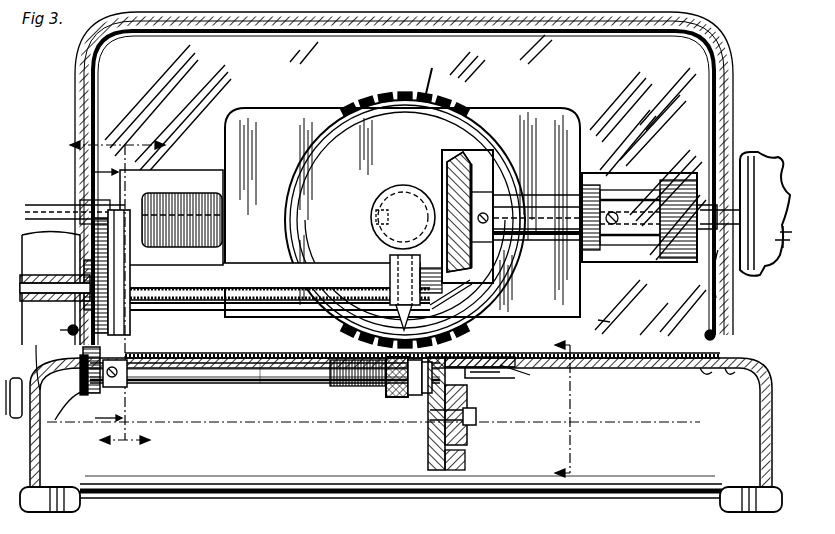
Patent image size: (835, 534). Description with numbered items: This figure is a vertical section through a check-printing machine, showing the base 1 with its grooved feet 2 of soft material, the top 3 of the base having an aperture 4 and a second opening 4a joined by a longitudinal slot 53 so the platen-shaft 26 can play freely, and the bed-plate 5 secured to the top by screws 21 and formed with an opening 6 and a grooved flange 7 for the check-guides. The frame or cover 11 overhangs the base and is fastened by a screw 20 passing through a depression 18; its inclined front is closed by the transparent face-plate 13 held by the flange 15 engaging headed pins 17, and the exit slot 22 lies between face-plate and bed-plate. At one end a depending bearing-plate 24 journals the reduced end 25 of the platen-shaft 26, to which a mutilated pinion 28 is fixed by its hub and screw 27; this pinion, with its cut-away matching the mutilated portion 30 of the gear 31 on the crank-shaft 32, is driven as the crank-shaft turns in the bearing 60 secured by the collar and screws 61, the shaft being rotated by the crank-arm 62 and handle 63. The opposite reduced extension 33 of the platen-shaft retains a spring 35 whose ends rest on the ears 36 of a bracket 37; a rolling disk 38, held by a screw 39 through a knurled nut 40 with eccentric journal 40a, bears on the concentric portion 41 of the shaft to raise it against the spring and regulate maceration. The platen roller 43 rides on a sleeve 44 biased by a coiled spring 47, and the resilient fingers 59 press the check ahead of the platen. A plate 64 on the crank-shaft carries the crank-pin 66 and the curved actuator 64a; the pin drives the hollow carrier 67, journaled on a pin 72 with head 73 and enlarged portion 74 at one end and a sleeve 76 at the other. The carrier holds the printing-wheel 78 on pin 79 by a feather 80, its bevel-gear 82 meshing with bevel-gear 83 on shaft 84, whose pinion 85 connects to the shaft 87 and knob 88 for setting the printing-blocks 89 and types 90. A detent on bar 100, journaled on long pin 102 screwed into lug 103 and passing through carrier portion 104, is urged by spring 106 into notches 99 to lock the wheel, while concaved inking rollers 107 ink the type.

The base 1 is at (340, 486).
The grooved feet or pads 2 is at (60, 510).
The top of the base 3 is at (616, 368).
The aperture 4 is at (422, 346).
The opening 4a is at (150, 304).
The bed-plate 5 is at (222, 386).
The opening 6 is at (350, 416).
The flange or rib 7 is at (73, 293).
The frame or cover 11 is at (398, 33).
The glass-plate or transparent face-plate 13 is at (650, 306).
The flange 15 is at (228, 30).
The headed pins 17 is at (722, 338).
The depression 18 is at (732, 375).
The screw 20 is at (706, 375).
The screws 21 is at (668, 370).
The exit slot 22 is at (634, 368).
The depending flange or bearing-plate 24 is at (65, 423).
The reduced end of the platen-shaft 25 is at (85, 370).
The platen-shaft 26 is at (208, 384).
The hub and screw 27 is at (128, 385).
The mutilated pinion 28 is at (82, 395).
The mutilated portion of gear 30 is at (108, 330).
The mutilated gear 31 is at (92, 252).
The crank-shaft 32 is at (72, 278).
The reduced extension 33 is at (470, 372).
The spring 35 is at (475, 378).
The ears 36 is at (518, 377).
The bracket 37 is at (428, 450).
The rolling disk 38 is at (450, 462).
The screw 39 is at (476, 416).
The knurled nut 40 is at (468, 440).
The eccentric journal or bearing 40a is at (432, 472).
The smooth or concentric portion 41 is at (428, 395).
The platen roller or wheel 43 is at (414, 396).
The collar or sleeve 44 is at (392, 398).
The spring 47 is at (342, 388).
The slot 53 is at (265, 384).
The resilient fingers 59 is at (352, 340).
The bearing 60 is at (30, 236).
The collar and screws 61 is at (68, 330).
The crank-arm 62 is at (41, 367).
The manipulating handle 63 is at (16, 420).
The plate 64 is at (128, 270).
The actuator 64a is at (158, 306).
The crank-pin 66 is at (172, 266).
The carrier 67 is at (402, 212).
The pin 72 is at (190, 180).
The head 73 is at (78, 205).
The enlarged portion 74 is at (80, 200).
The sleeve 76 is at (728, 286).
The printing-wheel 78 is at (405, 207).
The pin 79 is at (400, 190).
The feather or rib 80 is at (376, 224).
The bevel-gear 82 is at (450, 175).
The bevel-gear 83 is at (476, 180).
The shaft 84 is at (548, 242).
The pinion 85 is at (590, 180).
The shaft 87 is at (700, 180).
The knob 88 is at (758, 160).
The printing-blocks 89 is at (427, 73).
The types or lines of types 90 is at (403, 95).
The notches 99 is at (445, 305).
The bar 100 is at (316, 264).
The long pin 102 is at (275, 275).
The lug or ear 103 is at (440, 284).
The portion of the carrier 104 is at (138, 308).
The spring 106 is at (360, 292).
The concaved inking rollers 107 is at (275, 430).